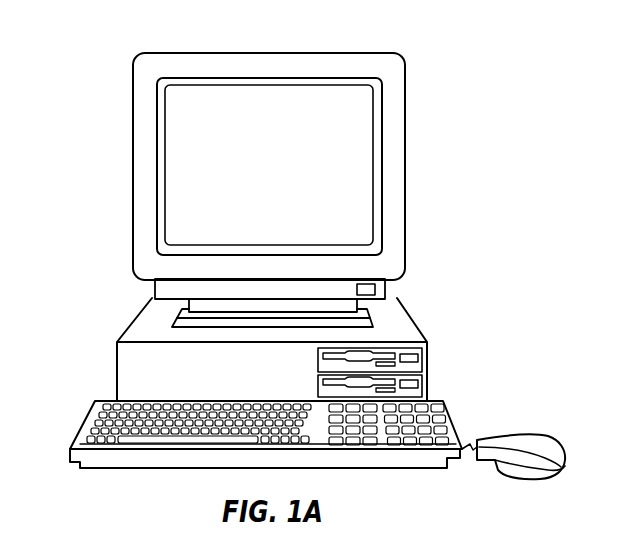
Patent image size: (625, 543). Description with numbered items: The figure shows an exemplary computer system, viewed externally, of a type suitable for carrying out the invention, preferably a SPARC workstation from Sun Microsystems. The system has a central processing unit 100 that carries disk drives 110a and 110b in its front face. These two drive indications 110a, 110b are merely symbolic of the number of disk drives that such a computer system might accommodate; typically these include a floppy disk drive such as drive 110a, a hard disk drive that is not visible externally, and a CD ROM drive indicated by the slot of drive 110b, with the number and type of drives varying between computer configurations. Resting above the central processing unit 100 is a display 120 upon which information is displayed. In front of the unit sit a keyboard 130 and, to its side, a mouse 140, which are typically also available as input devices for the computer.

The central processing unit 100 is at (116, 378).
The disk drive 110a is at (423, 362).
The disk drive 110b is at (423, 385).
The display 120 is at (184, 53).
The keyboard 130 is at (83, 428).
The mouse 140 is at (535, 432).